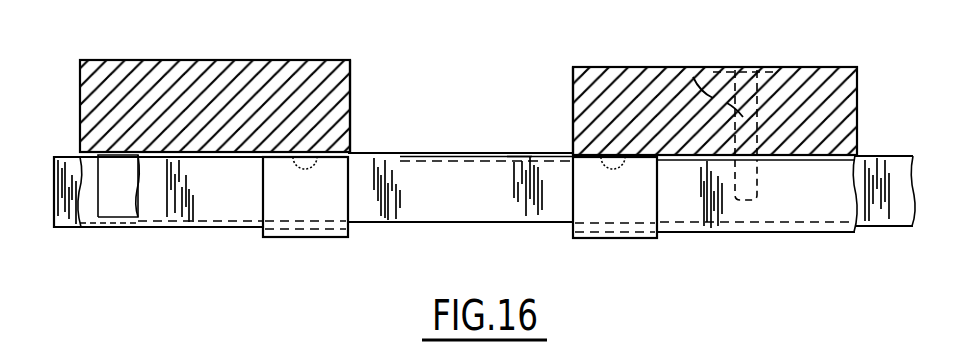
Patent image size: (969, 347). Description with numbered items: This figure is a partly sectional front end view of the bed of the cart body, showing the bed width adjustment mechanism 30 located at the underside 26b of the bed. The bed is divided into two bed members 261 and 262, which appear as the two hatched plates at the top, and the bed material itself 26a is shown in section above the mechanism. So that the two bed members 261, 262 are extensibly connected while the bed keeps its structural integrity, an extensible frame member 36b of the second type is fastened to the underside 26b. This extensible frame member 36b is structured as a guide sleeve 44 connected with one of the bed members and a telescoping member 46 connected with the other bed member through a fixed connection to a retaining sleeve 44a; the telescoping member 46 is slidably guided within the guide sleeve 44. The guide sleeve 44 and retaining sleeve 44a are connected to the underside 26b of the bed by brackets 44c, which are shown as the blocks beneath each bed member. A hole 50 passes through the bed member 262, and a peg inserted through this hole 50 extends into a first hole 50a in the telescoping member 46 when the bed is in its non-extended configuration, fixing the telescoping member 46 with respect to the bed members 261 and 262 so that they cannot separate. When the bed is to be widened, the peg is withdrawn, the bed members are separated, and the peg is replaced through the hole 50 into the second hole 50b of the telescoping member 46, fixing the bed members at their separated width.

The upper frame plate 26a is at (260, 47).
The bed member 261 is at (349, 88).
The bed member 262 is at (573, 85).
The underside of the bed 26b is at (228, 152).
The bed width adjustment mechanism 30 is at (253, 230).
The extensible frame member 36b is at (442, 223).
The guide sleeve 44 is at (812, 233).
The retaining sleeve 44a is at (112, 228).
The bracket 44c is at (313, 237).
The telescoping member 46 is at (468, 139).
The hole in the bed 50 is at (692, 68).
The first hole 50a is at (517, 155).
The second hole 50b is at (746, 175).